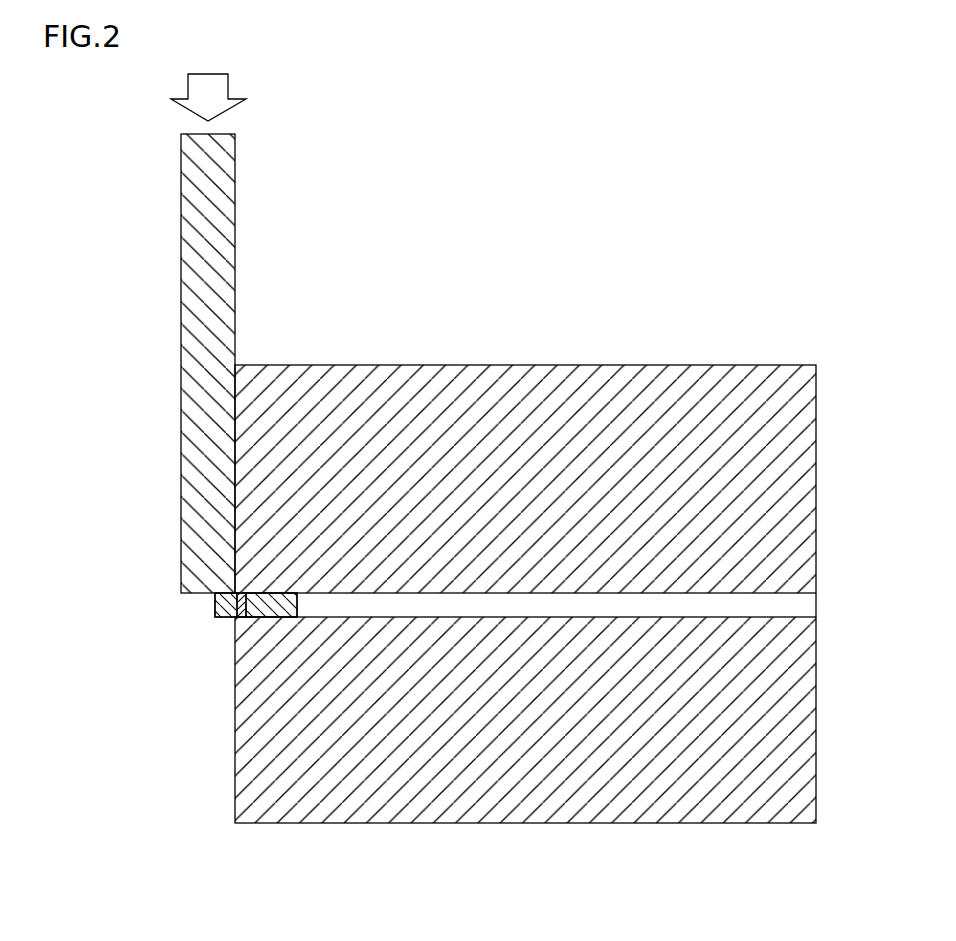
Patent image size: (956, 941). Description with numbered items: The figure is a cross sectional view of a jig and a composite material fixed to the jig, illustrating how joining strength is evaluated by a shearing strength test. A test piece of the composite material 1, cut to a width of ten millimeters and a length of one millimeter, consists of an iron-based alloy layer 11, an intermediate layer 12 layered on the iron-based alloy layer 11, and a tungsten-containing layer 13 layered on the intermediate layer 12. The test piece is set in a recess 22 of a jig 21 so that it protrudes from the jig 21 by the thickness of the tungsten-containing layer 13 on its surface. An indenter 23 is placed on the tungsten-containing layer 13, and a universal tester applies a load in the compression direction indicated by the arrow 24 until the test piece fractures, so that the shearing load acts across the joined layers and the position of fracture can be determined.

The composite material 1 is at (139, 689).
The iron-based alloy layer 11 is at (254, 617).
The intermediate layer 12 is at (240, 617).
The tungsten-containing layer 13 is at (218, 617).
The jig 21 is at (258, 745).
The recess 22 is at (800, 608).
The indenter 23 is at (188, 435).
The arrow 24 is at (216, 88).